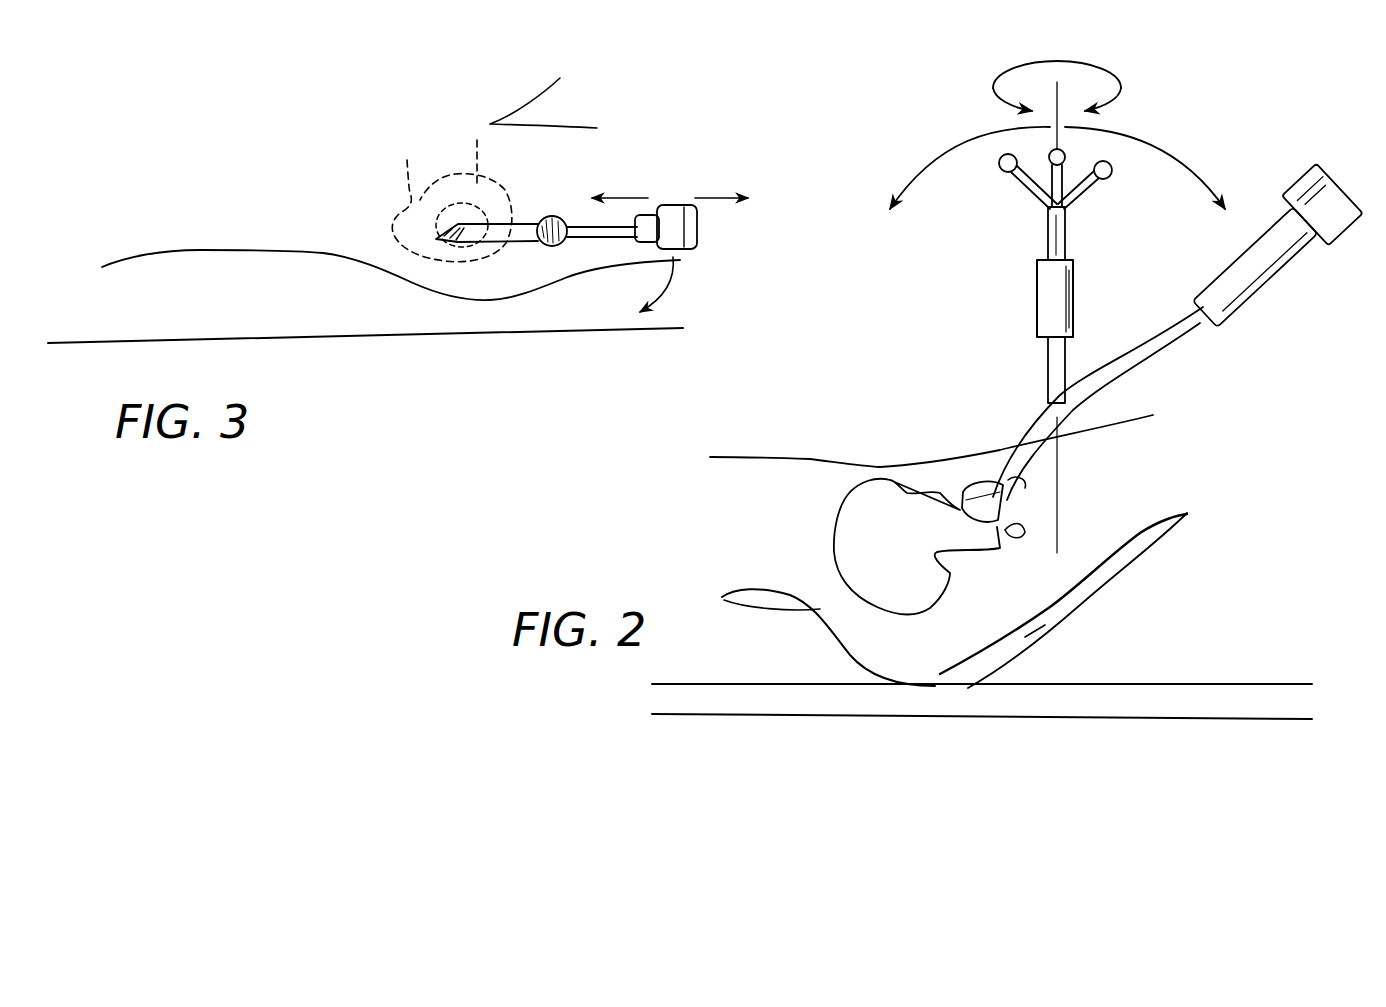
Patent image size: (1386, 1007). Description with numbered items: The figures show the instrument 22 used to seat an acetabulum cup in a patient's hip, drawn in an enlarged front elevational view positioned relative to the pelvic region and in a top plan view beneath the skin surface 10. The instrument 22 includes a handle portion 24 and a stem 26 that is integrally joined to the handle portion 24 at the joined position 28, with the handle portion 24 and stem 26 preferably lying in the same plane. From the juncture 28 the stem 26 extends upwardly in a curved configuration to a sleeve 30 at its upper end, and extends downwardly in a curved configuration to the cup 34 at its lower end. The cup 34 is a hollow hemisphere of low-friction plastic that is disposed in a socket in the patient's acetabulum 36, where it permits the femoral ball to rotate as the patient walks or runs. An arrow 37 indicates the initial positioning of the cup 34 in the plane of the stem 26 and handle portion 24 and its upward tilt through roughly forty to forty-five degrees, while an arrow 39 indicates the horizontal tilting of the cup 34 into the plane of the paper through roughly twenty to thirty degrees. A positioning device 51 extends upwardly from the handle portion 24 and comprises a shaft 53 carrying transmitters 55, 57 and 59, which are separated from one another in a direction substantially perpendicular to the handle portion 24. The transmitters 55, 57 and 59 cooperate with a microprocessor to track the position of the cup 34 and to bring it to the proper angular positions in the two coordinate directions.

In FIG. 3, the skin surface 10 is at (292, 224).
In FIG. 3, the instrument 22 is at (686, 147).
In FIG. 2, the instrument 22 is at (1161, 424).
In FIG. 3, the handle portion 24 is at (553, 216).
In FIG. 2, the handle portion 24 is at (1047, 303).
In FIG. 3, the stem 26 is at (593, 233).
In FIG. 2, the stem 26 is at (1150, 353).
In FIG. 2, the joined position 28 is at (1047, 402).
In FIG. 3, the sleeve 30 is at (698, 232).
In FIG. 2, the sleeve 30 is at (1262, 262).
In FIG. 3, the cup 34 is at (477, 140).
In FIG. 2, the cup 34 is at (947, 500).
In FIG. 3, the acetabulum 36 is at (395, 148).
In FIG. 2, the acetabulum 36 is at (887, 513).
In FIG. 3, the arrow 37 is at (718, 185).
In FIG. 2, the arrow 37 is at (1160, 147).
In FIG. 3, the arrow 39 is at (670, 195).
In FIG. 2, the arrow 39 is at (1097, 63).
In FIG. 2, the positioning device 51 is at (1028, 217).
In FIG. 2, the shaft 53 is at (1067, 233).
In FIG. 2, the transmitter 55 is at (1007, 172).
In FIG. 2, the transmitter 57 is at (1073, 153).
In FIG. 2, the transmitter 59 is at (1113, 173).